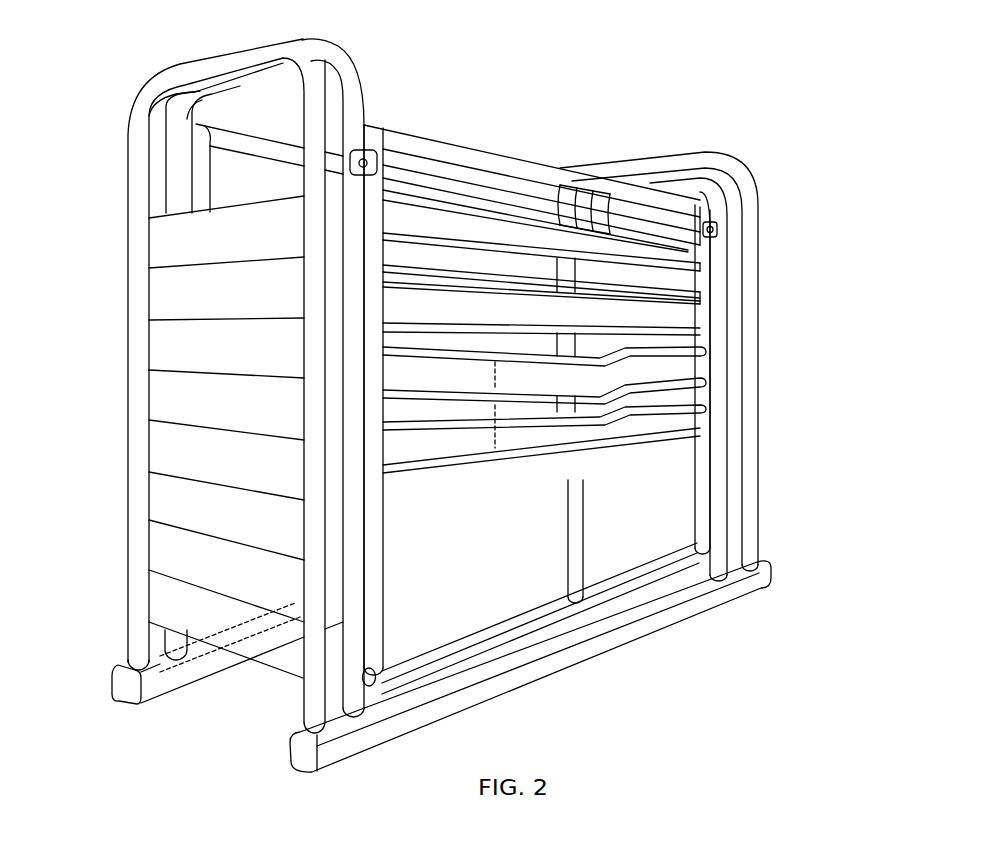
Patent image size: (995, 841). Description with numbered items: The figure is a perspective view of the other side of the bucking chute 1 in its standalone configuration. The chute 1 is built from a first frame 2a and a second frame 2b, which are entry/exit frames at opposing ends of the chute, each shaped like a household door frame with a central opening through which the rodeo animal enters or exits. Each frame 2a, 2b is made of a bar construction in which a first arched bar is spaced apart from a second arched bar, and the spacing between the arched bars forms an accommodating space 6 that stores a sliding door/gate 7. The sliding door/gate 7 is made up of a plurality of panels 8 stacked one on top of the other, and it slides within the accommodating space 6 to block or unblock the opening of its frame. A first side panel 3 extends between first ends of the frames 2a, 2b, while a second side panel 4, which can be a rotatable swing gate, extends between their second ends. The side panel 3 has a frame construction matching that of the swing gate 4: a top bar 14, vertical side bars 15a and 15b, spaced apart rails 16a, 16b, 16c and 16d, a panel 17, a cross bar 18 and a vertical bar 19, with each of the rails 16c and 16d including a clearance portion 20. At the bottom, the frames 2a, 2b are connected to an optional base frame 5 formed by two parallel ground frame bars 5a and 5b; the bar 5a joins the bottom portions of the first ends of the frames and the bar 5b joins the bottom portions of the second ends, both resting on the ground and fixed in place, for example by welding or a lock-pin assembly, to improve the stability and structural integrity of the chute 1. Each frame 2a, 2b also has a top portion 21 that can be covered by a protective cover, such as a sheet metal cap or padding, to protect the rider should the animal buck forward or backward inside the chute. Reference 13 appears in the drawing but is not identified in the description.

The chute 1 is at (109, 79).
The first frame 2a is at (126, 140).
The second frame 2b is at (760, 205).
The first side panel 3 is at (533, 158).
The second side panel 4 is at (448, 182).
The base frame 5 is at (108, 777).
The ground frame bar 5a is at (300, 747).
The ground frame bar 5b is at (128, 688).
The accommodating space 6 is at (157, 182).
The sliding door/gate 7 is at (149, 382).
The panels 8 is at (195, 455).
The bottom rail 13 is at (457, 643).
The top bar 14 is at (408, 143).
The vertical side bar 15a is at (373, 637).
The vertical side bar 15b is at (710, 215).
The rail 16a is at (680, 257).
The rail 16b is at (673, 312).
The rail 16c is at (667, 362).
The rail 16d is at (665, 415).
The panel 17 is at (615, 547).
The cross bar 18 is at (430, 493).
The vertical bar 19 is at (578, 550).
The clearance portion 20 is at (565, 372).
The top portion 21 is at (679, 152).